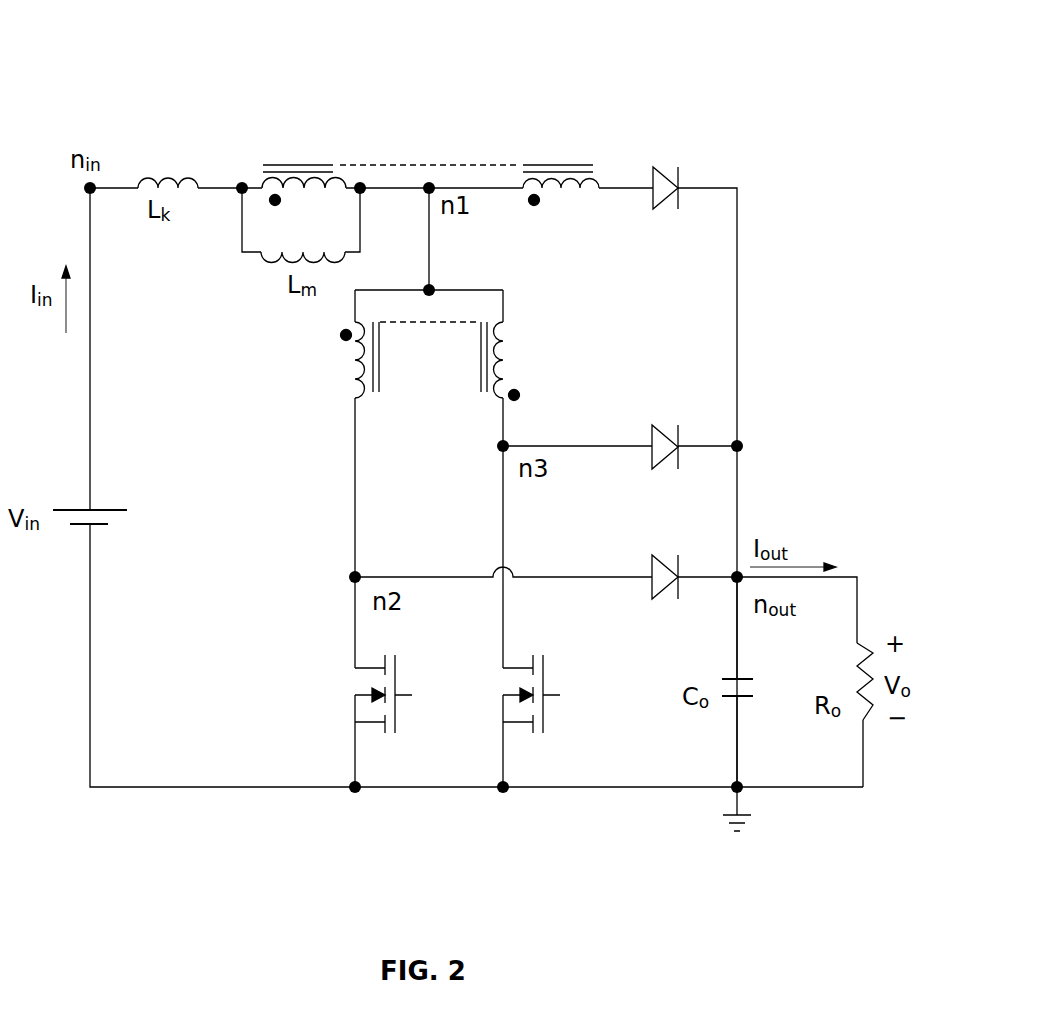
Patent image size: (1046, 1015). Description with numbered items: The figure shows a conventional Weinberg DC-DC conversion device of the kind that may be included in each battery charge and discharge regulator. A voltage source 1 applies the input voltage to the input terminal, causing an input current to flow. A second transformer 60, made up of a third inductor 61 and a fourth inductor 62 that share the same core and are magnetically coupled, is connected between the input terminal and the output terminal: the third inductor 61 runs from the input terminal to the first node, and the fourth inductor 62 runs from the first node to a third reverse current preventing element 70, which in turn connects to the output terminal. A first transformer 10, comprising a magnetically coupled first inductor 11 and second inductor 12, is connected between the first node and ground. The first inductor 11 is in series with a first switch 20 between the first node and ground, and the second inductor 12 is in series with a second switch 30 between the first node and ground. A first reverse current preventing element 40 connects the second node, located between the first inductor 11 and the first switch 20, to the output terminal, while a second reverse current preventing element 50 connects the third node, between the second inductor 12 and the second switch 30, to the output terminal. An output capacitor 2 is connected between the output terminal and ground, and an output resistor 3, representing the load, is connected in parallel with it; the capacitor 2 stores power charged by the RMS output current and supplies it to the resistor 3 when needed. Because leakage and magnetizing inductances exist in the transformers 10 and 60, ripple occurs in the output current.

The voltage source 1 is at (67, 510).
The output capacitor 2 is at (749, 698).
The output resistor 3 is at (873, 628).
The first transformer 10 is at (469, 342).
The first inductor 11 is at (349, 381).
The second inductor 12 is at (507, 360).
The first switch 20 is at (355, 703).
The second switch 30 is at (500, 705).
The first reverse current preventing element 40 is at (652, 561).
The second reverse current preventing element 50 is at (655, 425).
The second transformer 60 is at (494, 135).
The third inductor 61 is at (265, 182).
The fourth inductor 62 is at (602, 180).
The third reverse current preventing element 70 is at (680, 172).